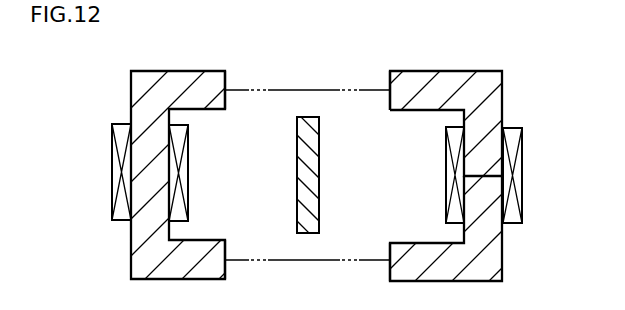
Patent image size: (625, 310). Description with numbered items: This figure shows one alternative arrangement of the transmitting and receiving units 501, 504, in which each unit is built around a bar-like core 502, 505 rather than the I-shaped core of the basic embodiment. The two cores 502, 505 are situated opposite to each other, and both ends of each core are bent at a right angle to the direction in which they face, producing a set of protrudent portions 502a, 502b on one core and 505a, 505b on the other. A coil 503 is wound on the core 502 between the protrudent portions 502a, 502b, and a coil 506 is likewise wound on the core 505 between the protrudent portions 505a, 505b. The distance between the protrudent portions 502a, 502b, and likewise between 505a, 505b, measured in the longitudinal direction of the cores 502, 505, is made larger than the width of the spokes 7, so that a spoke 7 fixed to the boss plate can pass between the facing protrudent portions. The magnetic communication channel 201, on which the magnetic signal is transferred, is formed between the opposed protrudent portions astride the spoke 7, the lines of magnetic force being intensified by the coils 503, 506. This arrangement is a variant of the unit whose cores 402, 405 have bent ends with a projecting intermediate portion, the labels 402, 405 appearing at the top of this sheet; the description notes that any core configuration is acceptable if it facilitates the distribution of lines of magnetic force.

The transmitting and receiving unit 501 is at (461, 70).
The bar-like core 502 is at (463, 282).
The protrudent portion 502a is at (388, 78).
The protrudent portion 502b is at (389, 279).
The coil 503 is at (520, 148).
The transmitting and receiving unit 504 is at (158, 70).
The bar-like core 505 is at (161, 280).
The protrudent portion 505a is at (226, 73).
The protrudent portion 505b is at (226, 278).
The coil 506 is at (115, 135).
The spoke 7 is at (321, 172).
The magnetic communication channel 201 is at (322, 90).
The core 405 is at (255, 9).
The core 402 is at (354, 9).